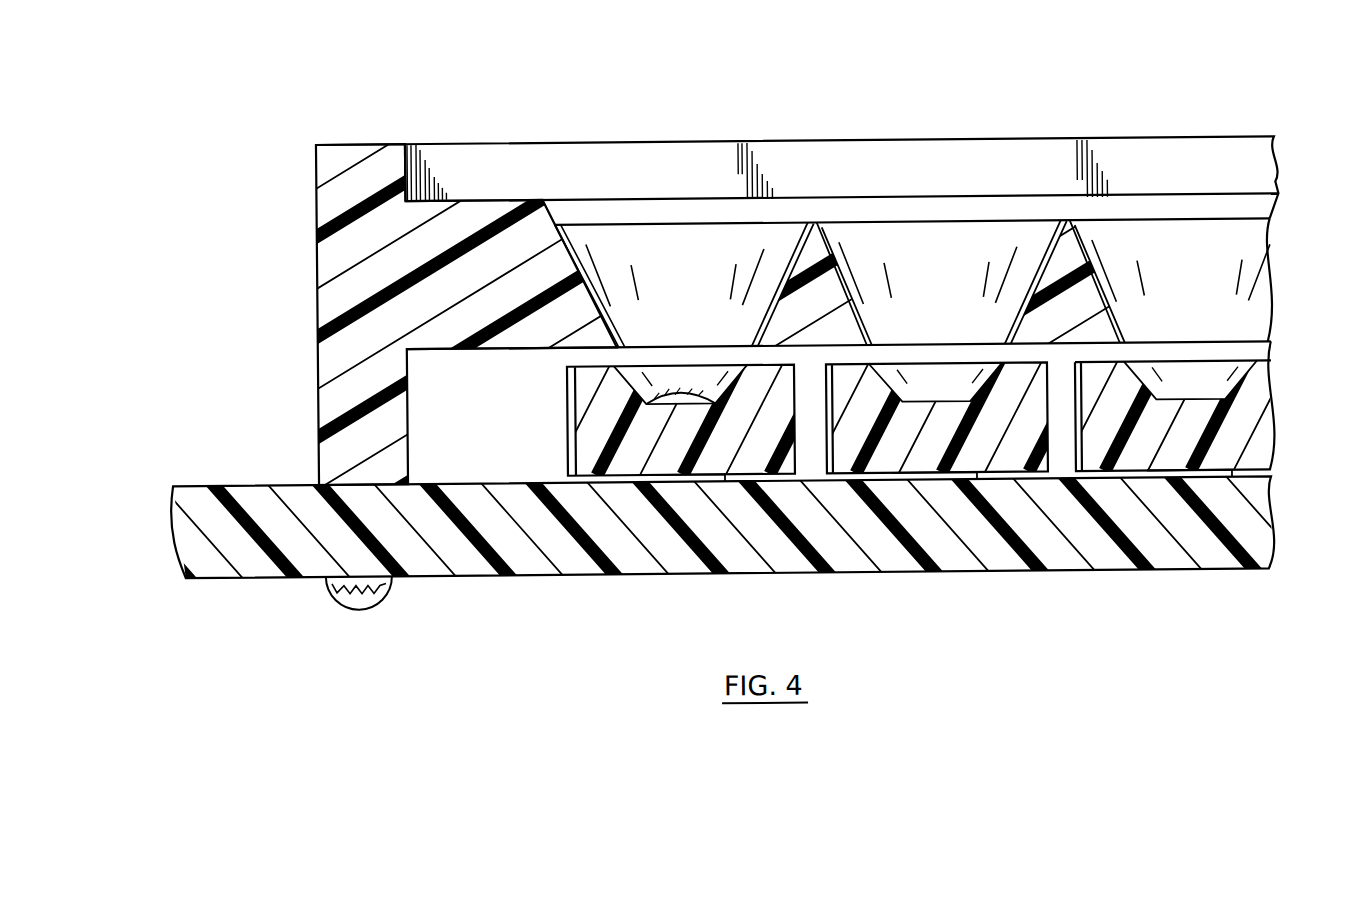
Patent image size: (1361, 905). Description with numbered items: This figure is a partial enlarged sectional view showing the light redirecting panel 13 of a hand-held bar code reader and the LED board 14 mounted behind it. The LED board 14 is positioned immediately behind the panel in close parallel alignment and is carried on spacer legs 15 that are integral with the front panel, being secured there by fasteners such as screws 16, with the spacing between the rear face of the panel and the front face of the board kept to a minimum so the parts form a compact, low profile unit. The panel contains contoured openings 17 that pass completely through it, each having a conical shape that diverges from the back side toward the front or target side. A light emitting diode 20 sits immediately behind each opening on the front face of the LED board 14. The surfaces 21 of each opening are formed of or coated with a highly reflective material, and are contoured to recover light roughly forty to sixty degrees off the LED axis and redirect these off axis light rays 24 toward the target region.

The light redirecting panel 13 is at (297, 282).
The LED board 14 is at (551, 588).
The spacer legs 15 is at (318, 425).
The screws 16 is at (358, 611).
The contoured openings 17 is at (694, 292).
The light emitting diode 20 is at (1256, 432).
The surfaces 21 is at (823, 238).
The off axis light rays 24 is at (685, 398).